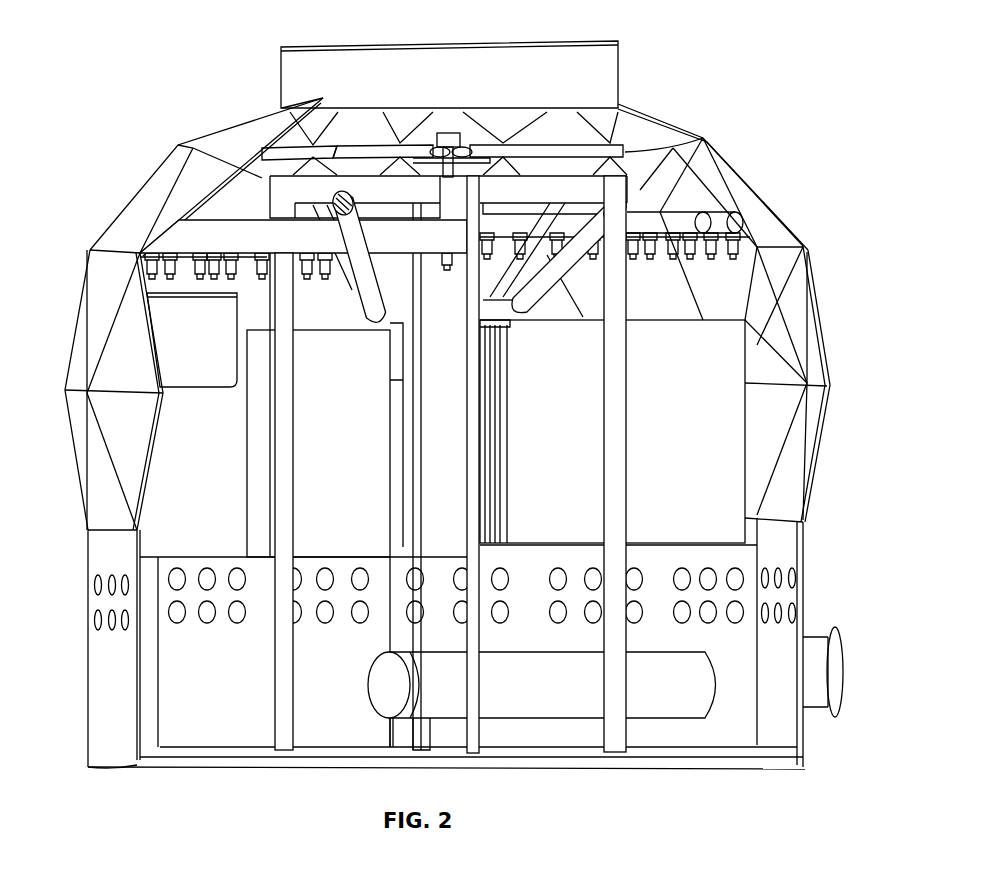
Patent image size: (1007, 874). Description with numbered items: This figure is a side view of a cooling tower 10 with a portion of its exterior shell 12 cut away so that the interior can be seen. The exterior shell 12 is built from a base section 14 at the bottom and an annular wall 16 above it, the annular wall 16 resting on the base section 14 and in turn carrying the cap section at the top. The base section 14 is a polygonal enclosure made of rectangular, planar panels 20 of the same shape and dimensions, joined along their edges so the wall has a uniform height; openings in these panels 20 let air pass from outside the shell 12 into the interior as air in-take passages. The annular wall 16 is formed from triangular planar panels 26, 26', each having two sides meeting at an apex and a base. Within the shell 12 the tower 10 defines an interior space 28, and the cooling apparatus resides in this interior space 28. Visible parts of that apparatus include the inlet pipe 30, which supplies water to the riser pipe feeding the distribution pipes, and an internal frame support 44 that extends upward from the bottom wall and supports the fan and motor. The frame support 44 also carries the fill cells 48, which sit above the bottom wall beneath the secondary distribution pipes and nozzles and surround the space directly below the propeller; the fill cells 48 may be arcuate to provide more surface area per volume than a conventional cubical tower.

The cooling tower 10 is at (703, 62).
The exterior shell 12 is at (130, 181).
The base section 14 is at (86, 557).
The annular wall 16 is at (65, 390).
The panels 20 is at (95, 733).
The triangular planar panel 26 is at (115, 323).
The triangular planar panel 26' is at (117, 461).
The interior space 28 is at (282, 179).
The inlet pipe 30 is at (552, 690).
The internal frame support 44 is at (613, 287).
The fill cells 48 is at (715, 433).